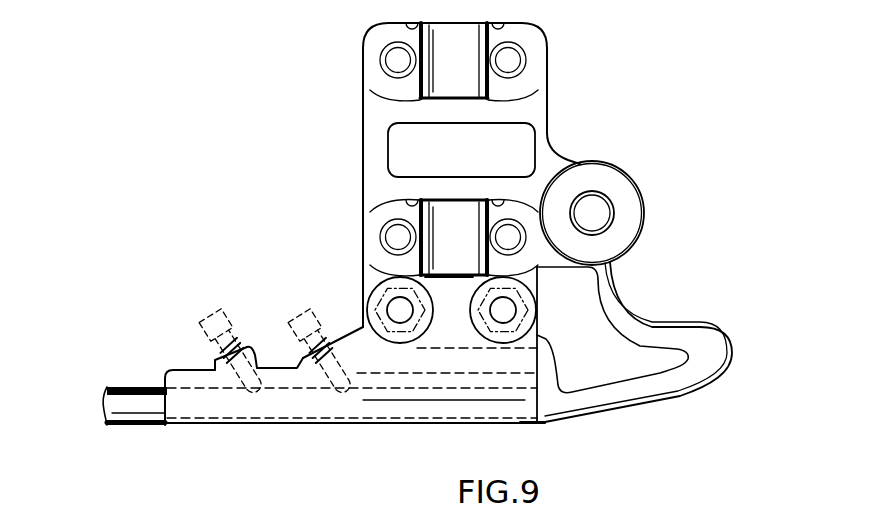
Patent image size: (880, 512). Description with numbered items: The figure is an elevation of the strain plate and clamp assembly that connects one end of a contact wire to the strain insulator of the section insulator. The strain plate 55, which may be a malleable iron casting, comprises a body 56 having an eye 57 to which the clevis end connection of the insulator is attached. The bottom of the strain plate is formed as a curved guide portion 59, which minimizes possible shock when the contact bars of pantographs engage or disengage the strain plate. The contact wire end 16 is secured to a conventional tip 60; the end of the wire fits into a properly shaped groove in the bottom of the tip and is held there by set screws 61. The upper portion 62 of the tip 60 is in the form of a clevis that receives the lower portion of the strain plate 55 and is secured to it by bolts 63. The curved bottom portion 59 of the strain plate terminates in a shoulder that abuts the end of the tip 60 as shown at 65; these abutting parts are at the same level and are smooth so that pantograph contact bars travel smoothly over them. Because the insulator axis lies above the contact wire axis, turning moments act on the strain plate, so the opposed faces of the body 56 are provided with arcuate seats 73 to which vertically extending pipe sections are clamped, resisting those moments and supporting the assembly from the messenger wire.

The contact wire end 16 is at (141, 386).
The strain plate 55 is at (358, 121).
The body 56 is at (546, 141).
The eye 57 is at (635, 196).
The curved guide portion 59 is at (658, 392).
The tip 60 is at (208, 371).
The set screws 61 is at (214, 319).
The upper portion 62 is at (357, 327).
The bolts 63 is at (503, 312).
The abutment 65 is at (538, 421).
The arcuate seats 73 is at (463, 80).